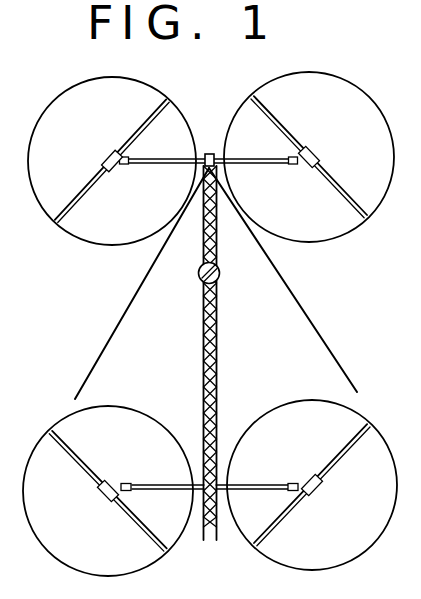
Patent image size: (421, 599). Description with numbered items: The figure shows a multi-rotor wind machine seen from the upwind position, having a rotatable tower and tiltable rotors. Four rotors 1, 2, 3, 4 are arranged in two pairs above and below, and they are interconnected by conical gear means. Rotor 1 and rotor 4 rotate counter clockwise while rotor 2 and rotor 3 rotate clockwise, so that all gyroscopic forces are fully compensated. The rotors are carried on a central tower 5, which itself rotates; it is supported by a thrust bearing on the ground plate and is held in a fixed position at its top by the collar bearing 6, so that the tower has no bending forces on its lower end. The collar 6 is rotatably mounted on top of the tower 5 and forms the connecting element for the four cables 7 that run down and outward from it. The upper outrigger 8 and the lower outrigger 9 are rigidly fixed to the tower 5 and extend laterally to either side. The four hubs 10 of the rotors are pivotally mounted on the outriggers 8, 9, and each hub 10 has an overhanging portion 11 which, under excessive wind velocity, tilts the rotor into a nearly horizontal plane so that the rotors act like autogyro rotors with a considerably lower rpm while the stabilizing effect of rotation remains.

The rotor 1 is at (91, 189).
The rotor 2 is at (333, 172).
The rotor 3 is at (165, 523).
The rotor 4 is at (263, 534).
The tower 5 is at (225, 353).
The collar 6 is at (215, 169).
The cables 7 is at (156, 257).
The outrigger 8 is at (257, 158).
The outrigger 9 is at (244, 485).
The hub 10 is at (314, 493).
The overhanging portion 11 is at (299, 470).